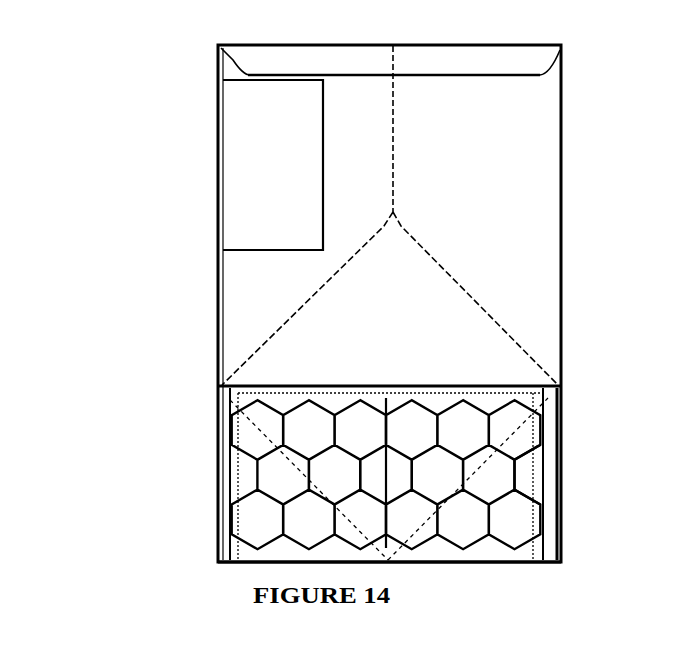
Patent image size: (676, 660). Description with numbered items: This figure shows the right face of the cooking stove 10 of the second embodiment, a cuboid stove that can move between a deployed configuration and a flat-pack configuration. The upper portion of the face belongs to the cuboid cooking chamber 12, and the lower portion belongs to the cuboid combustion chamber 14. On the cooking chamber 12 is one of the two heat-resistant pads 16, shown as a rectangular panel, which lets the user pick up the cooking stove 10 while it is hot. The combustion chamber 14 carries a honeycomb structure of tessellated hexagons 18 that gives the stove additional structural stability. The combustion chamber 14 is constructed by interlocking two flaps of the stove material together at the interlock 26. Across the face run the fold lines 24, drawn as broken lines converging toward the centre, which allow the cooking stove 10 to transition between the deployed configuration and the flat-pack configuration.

The cooking stove 10 is at (80, 106).
The cooking chamber 12 is at (548, 240).
The combustion chamber 14 is at (553, 475).
The heat-resistant pad 16 is at (240, 185).
The honeycomb structure of tessellated hexagons 18 is at (231, 440).
The fold lines 24 is at (500, 328).
The interlock 26 is at (392, 468).